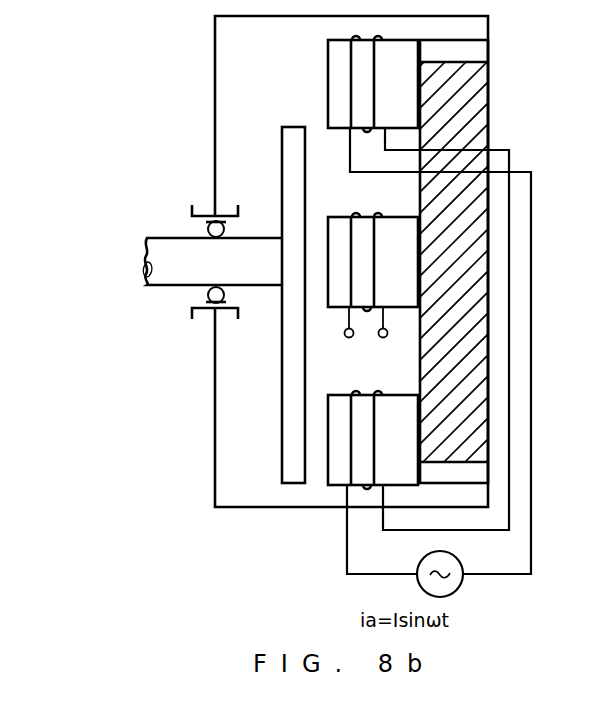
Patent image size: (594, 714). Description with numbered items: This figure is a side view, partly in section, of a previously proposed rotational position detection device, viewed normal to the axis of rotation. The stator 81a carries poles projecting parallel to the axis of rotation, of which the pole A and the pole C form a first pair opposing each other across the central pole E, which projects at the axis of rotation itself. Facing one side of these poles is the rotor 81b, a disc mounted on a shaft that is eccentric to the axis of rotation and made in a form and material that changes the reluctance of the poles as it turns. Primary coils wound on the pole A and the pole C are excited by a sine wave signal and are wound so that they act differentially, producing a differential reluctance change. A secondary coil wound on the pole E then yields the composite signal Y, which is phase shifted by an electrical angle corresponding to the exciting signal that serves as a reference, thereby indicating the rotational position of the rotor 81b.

The stator 81a is at (467, 88).
The rotor 81b is at (282, 368).
The pole A is at (328, 56).
The pole C is at (328, 443).
The pole E is at (330, 310).
The composite signal Y is at (366, 335).